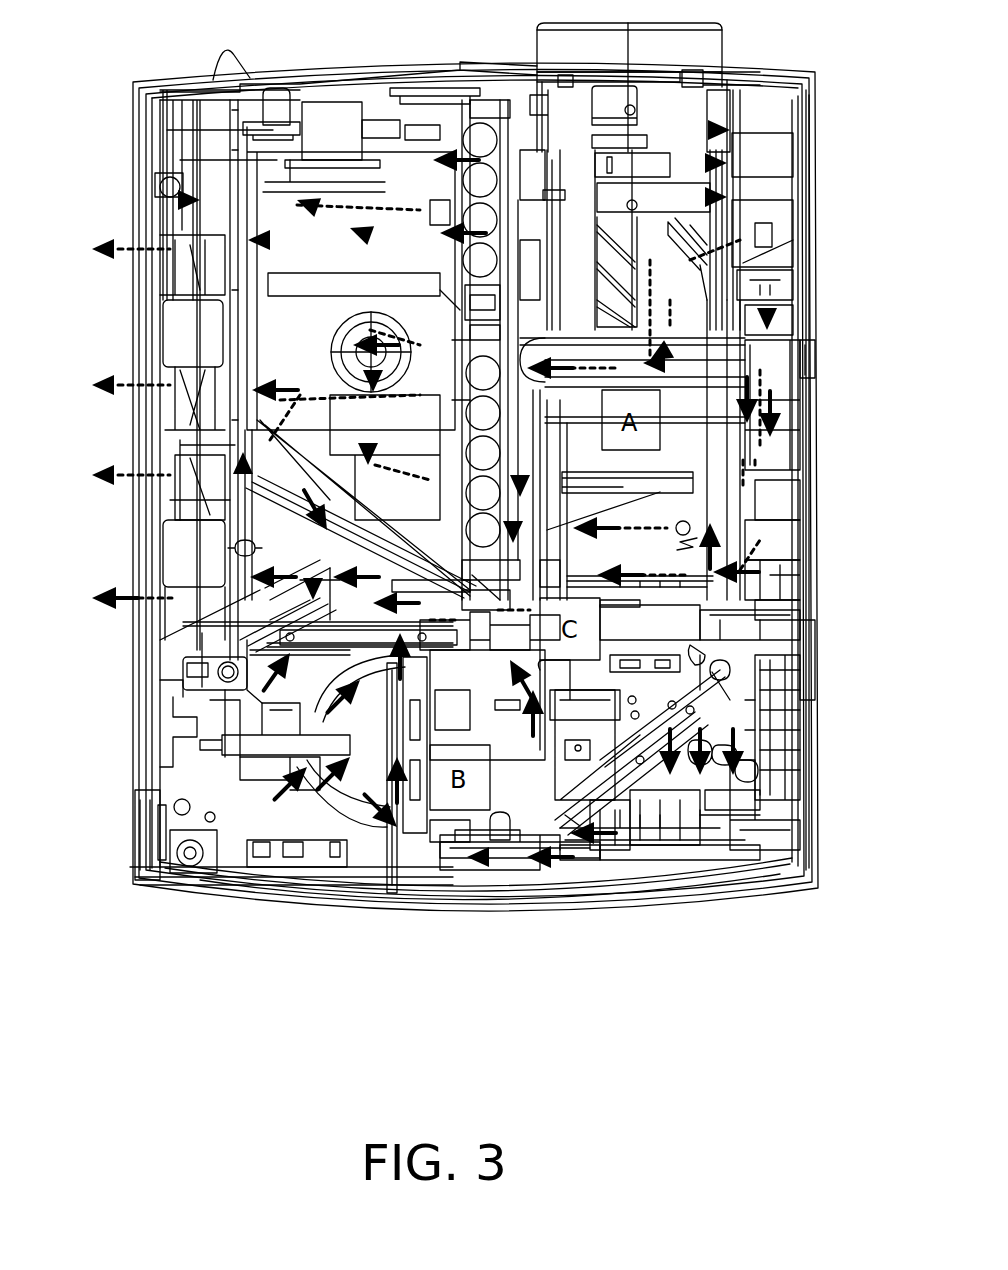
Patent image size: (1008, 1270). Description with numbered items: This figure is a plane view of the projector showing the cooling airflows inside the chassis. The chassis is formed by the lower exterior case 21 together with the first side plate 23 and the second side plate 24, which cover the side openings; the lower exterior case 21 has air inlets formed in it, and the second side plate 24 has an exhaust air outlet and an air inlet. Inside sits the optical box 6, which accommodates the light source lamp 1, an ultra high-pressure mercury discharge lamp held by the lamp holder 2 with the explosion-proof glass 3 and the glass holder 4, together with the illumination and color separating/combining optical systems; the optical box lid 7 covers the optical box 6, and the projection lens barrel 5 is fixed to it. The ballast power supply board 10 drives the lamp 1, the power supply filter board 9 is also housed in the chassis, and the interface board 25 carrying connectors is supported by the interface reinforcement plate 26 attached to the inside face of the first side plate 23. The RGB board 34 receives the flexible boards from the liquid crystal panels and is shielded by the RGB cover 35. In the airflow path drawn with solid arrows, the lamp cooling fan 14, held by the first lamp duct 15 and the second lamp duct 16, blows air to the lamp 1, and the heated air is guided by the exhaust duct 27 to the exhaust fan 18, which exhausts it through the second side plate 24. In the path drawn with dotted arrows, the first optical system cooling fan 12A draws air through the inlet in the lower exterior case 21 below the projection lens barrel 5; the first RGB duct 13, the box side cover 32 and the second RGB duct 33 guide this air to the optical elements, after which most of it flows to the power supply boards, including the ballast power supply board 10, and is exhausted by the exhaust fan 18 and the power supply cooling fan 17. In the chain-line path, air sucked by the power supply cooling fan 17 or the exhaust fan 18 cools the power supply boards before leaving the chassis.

The light source lamp 1 is at (290, 705).
The lamp holder 2 is at (283, 810).
The explosion-proof glass 3 is at (415, 790).
The glass holder 4 is at (392, 700).
The projection lens barrel 5 is at (670, 62).
The optical box 6 is at (780, 622).
The optical box lid 7 is at (643, 727).
The power supply filter board 9 is at (700, 723).
The ballast power supply board 10 is at (277, 177).
The first optical system cooling fan 12A is at (740, 175).
The first RGB duct 13 is at (780, 247).
The lamp cooling fan 14 is at (680, 840).
The first lamp duct 15 is at (513, 860).
The second lamp duct 16 is at (575, 873).
The power supply cooling fan 17 is at (172, 327).
The exhaust fan 18 is at (172, 547).
The lower exterior case 21 is at (335, 55).
The first side plate 23 is at (820, 443).
The second side plate 24 is at (150, 805).
The interface board 25 is at (780, 680).
The interface reinforcement plate 26 is at (813, 577).
The exhaust duct 27 is at (255, 482).
The box side cover 32 is at (780, 407).
The second RGB duct 33 is at (813, 360).
The RGB board 34 is at (660, 492).
The RGB cover 35 is at (735, 572).